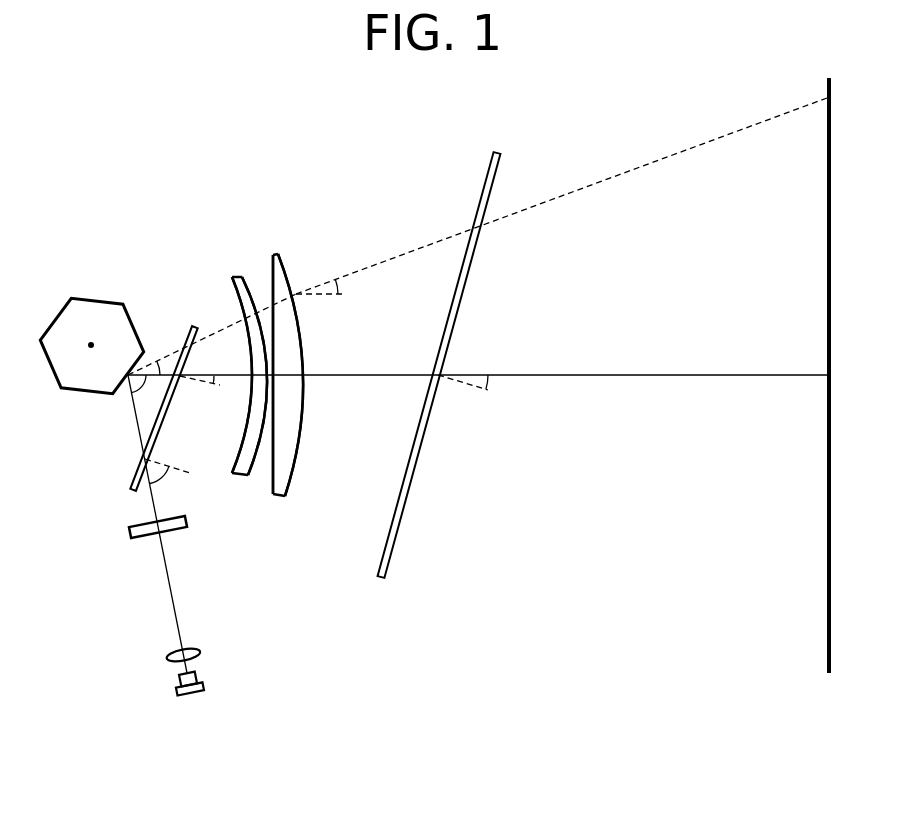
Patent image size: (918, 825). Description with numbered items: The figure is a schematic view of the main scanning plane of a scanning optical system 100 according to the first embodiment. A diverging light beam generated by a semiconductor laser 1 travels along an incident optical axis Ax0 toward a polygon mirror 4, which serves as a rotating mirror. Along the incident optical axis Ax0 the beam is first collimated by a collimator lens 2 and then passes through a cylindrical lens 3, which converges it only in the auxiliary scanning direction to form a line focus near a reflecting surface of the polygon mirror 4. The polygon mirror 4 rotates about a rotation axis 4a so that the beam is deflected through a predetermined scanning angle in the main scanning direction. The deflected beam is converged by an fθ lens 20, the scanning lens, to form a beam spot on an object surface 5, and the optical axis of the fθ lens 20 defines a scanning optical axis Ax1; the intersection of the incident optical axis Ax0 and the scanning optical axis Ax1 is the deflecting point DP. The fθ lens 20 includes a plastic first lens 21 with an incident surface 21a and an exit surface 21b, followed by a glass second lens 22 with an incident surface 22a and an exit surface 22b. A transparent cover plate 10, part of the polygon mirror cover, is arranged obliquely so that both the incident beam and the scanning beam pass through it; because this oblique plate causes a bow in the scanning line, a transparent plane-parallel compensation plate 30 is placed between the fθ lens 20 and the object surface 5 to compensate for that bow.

The scanning optical system 100 is at (601, 102).
The semiconductor laser 1 is at (203, 681).
The collimator lens 2 is at (199, 651).
The cylindrical lens 3 is at (178, 531).
The polygon mirror 4 is at (72, 392).
The rotation axis 4a is at (93, 342).
The object surface 5 is at (828, 575).
The cover plate 10 is at (133, 484).
The fθ lens 20 is at (260, 203).
The first lens 21 is at (236, 276).
The incident surface 21a is at (233, 471).
The exit surface 21b is at (246, 478).
The second lens 22 is at (278, 252).
The incident surface 22a is at (272, 498).
The exit surface 22b is at (287, 487).
The compensation plate 30 is at (390, 557).
The deflecting point DP is at (126, 378).
The incident optical axis Ax0 is at (168, 594).
The scanning optical axis Ax1 is at (653, 377).